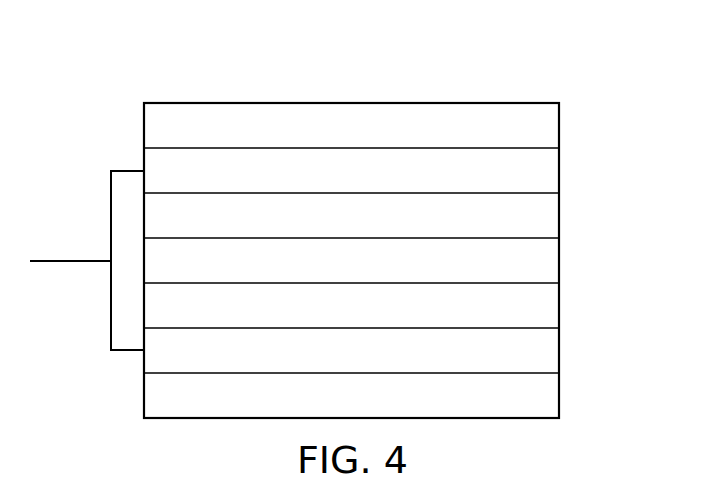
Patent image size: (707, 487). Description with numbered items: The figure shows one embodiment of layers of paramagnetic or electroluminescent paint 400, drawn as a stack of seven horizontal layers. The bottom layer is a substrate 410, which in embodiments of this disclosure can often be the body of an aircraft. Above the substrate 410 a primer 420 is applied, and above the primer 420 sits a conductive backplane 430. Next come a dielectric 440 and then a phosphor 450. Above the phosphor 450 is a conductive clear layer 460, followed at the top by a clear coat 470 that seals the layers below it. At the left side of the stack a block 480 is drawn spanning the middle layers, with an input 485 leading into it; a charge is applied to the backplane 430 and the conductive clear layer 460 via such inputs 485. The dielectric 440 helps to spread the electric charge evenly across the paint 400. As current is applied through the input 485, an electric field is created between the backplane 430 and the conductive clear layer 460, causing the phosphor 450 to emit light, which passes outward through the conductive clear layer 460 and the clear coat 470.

The paramagnetic or electroluminescent paint 400 is at (332, 220).
The substrate 410 is at (551, 397).
The primer 420 is at (551, 352).
The conductive backplane 430 is at (551, 307).
The dielectric 440 is at (552, 261).
The phosphor 450 is at (552, 216).
The conductive clear layer 460 is at (552, 171).
The clear coat 470 is at (552, 126).
The side block / contact 480 is at (110, 305).
The input 485 is at (65, 260).